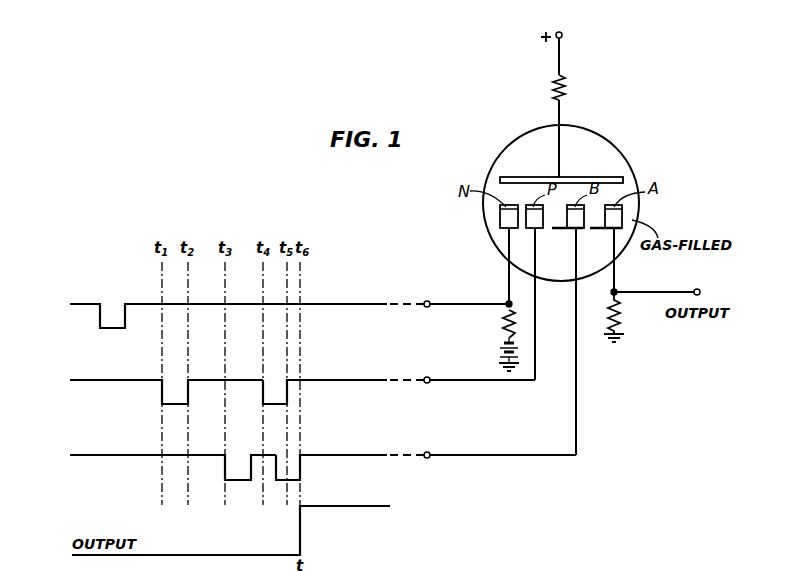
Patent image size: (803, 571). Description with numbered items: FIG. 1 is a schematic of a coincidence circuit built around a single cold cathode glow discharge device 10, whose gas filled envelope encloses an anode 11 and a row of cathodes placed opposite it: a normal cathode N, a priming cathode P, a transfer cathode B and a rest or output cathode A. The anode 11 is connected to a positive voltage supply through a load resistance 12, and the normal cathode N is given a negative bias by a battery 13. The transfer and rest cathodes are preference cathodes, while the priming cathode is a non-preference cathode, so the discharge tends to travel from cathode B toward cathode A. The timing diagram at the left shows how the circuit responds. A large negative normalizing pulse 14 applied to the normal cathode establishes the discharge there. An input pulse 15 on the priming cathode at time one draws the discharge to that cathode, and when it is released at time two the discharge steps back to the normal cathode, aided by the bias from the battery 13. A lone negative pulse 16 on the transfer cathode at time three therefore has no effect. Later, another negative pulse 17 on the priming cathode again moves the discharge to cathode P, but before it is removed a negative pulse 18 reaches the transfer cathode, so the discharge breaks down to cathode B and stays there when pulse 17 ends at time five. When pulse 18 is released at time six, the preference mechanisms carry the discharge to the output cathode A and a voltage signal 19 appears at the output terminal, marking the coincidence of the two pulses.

The glow discharge device 10 is at (612, 152).
The anode 11 is at (623, 177).
The load resistance 12 is at (566, 92).
The battery 13 is at (502, 351).
The normalizing pulse 14 is at (98, 319).
The input pulse 15 is at (162, 394).
The negative pulse 16 is at (225, 468).
The negative pulse 17 is at (290, 393).
The negative pulse 18 is at (302, 468).
The voltage signal 19 is at (338, 507).